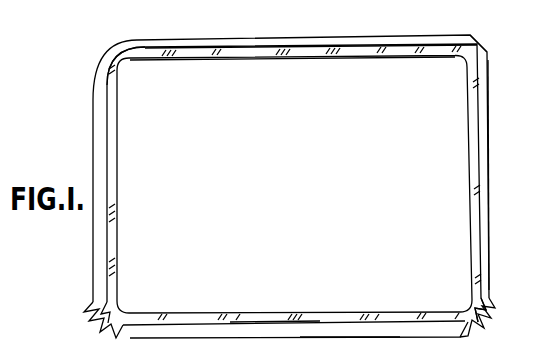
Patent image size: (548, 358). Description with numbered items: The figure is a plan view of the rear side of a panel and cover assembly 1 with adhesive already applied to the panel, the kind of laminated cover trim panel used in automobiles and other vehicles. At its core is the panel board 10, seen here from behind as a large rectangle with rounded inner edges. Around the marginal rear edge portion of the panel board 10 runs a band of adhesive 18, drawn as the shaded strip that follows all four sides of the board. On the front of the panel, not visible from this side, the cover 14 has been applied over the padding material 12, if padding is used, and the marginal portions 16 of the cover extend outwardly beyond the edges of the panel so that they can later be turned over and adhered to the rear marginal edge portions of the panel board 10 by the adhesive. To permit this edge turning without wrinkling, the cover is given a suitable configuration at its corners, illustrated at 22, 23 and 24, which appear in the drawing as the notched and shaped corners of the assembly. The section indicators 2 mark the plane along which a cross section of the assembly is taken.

The frame assembly 1 is at (312, 232).
The panel board 10 is at (220, 78).
The padding material 12 is at (275, 339).
The cover fabric 14 is at (352, 342).
The marginal portions of the cover 16 is at (488, 80).
The band of adhesive 18 is at (322, 55).
The corner configuration of the cover 22 is at (485, 325).
The corner configuration of the cover 23 is at (473, 42).
The corner configuration of the cover 24 is at (122, 50).
The section line 2- 2 is at (77, 264).